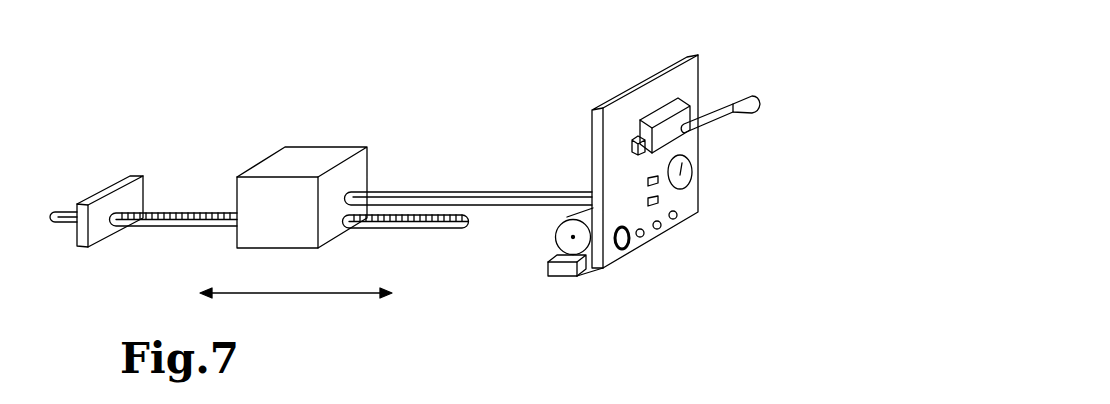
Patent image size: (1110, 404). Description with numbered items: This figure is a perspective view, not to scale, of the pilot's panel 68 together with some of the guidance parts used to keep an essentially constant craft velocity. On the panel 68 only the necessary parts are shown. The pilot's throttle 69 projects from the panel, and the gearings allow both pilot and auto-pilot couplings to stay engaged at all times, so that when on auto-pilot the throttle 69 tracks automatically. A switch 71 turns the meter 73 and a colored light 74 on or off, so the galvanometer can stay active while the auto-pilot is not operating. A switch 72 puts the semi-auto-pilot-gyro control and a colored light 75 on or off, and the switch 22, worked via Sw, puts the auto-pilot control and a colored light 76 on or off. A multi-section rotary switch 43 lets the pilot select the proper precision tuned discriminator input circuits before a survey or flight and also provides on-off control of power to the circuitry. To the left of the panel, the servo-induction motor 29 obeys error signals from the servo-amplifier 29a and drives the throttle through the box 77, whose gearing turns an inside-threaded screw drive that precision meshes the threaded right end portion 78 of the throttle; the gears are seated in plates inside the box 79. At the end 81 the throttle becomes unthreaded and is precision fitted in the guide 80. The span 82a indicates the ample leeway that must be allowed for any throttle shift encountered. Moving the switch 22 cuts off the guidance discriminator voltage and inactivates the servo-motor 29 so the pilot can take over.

The switch 22 is at (632, 133).
The servo-induction motor 29 is at (555, 238).
The servo-amplifier 29a is at (548, 272).
The multi-section rotary switch 43 is at (620, 250).
The pilot's panel 68 is at (698, 78).
The pilot's throttle 69 is at (760, 102).
The switch 71 is at (648, 182).
The switch 72 is at (648, 202).
The meter 73 is at (698, 170).
The colored light 74 is at (640, 238).
The colored light 75 is at (658, 230).
The colored light 76 is at (676, 220).
The box 77 is at (428, 192).
The threaded right end portion of throttle 78 is at (168, 228).
The box 79 is at (237, 246).
The guide 80 is at (90, 249).
The unthreaded end of throttle 81 is at (63, 210).
The throttle shift leeway 82a is at (287, 297).